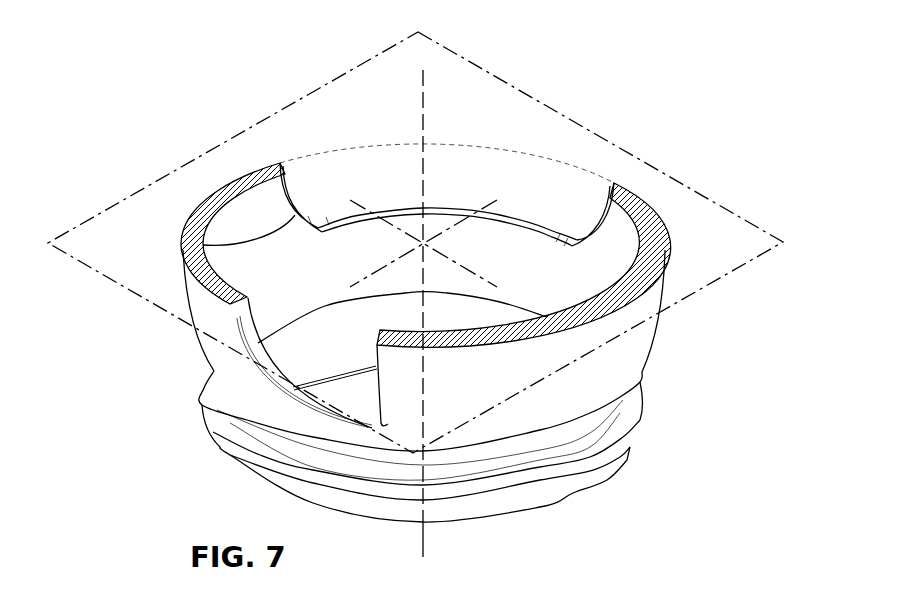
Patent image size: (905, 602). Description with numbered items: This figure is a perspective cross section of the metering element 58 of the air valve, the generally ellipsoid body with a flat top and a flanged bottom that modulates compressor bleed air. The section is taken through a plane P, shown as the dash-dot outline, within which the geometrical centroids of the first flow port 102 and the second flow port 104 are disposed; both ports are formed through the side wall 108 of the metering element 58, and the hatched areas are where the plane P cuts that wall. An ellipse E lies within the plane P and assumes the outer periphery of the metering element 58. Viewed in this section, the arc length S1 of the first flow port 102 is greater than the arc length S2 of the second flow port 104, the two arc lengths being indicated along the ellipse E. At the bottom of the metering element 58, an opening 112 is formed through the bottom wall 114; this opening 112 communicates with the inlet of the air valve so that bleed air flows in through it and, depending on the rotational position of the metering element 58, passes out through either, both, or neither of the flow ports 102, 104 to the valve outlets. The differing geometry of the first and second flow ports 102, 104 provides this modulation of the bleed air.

The metering element 58 is at (150, 130).
The first flow port 102 is at (187, 240).
The second flow port 104 is at (263, 412).
The side wall 108 is at (643, 355).
The opening 112 is at (344, 368).
The bottom wall 114 is at (583, 490).
The plane P is at (277, 110).
The ellipse E is at (353, 150).
The arc length of first flow port S1 is at (407, 143).
The arc length of second flow port S2 is at (392, 320).